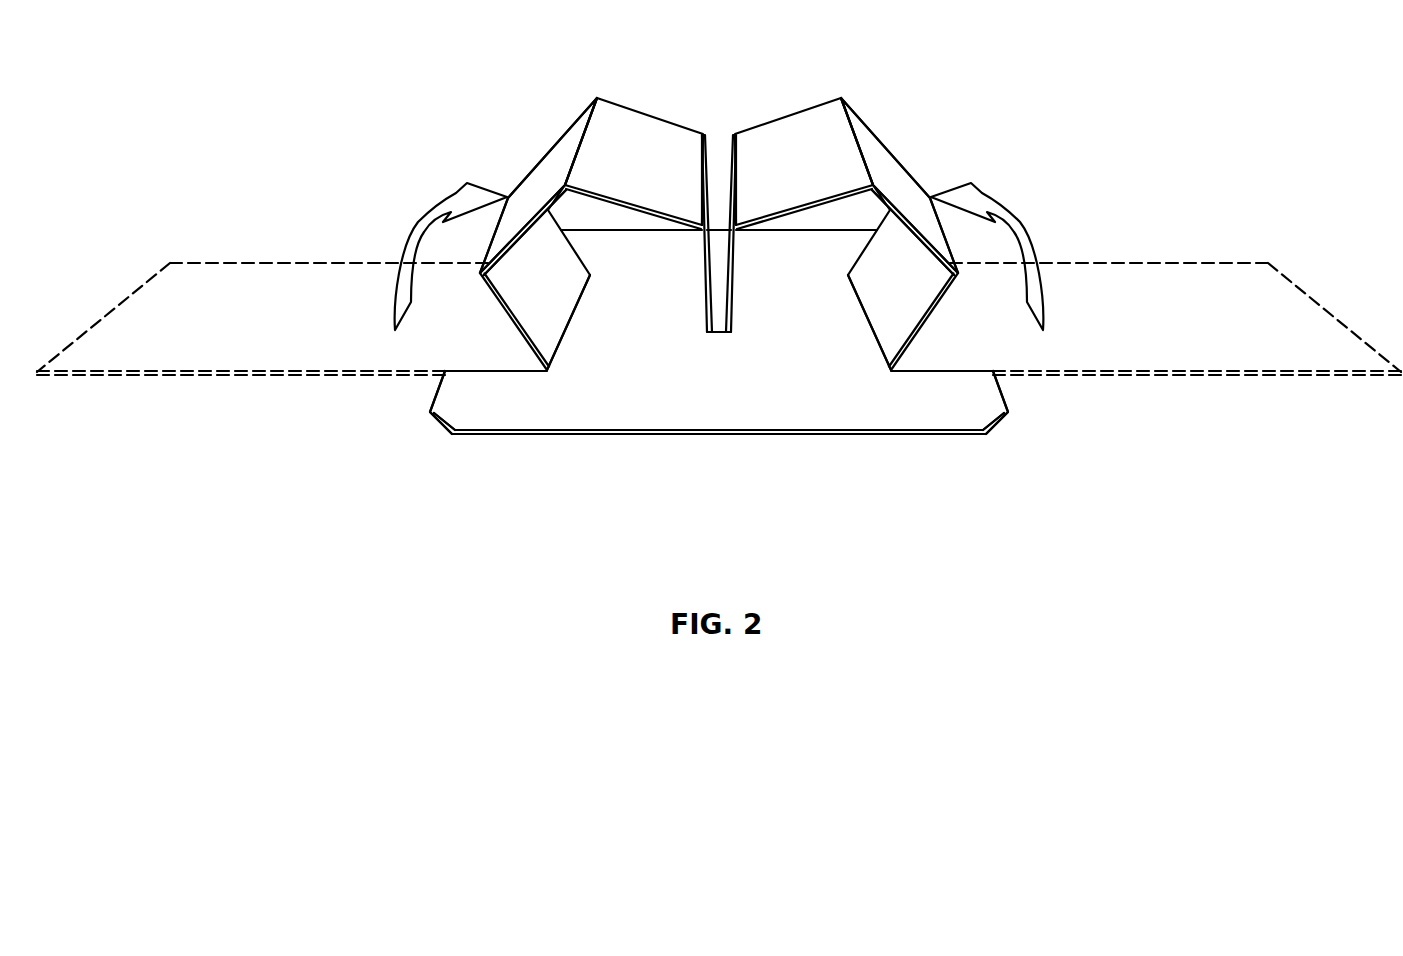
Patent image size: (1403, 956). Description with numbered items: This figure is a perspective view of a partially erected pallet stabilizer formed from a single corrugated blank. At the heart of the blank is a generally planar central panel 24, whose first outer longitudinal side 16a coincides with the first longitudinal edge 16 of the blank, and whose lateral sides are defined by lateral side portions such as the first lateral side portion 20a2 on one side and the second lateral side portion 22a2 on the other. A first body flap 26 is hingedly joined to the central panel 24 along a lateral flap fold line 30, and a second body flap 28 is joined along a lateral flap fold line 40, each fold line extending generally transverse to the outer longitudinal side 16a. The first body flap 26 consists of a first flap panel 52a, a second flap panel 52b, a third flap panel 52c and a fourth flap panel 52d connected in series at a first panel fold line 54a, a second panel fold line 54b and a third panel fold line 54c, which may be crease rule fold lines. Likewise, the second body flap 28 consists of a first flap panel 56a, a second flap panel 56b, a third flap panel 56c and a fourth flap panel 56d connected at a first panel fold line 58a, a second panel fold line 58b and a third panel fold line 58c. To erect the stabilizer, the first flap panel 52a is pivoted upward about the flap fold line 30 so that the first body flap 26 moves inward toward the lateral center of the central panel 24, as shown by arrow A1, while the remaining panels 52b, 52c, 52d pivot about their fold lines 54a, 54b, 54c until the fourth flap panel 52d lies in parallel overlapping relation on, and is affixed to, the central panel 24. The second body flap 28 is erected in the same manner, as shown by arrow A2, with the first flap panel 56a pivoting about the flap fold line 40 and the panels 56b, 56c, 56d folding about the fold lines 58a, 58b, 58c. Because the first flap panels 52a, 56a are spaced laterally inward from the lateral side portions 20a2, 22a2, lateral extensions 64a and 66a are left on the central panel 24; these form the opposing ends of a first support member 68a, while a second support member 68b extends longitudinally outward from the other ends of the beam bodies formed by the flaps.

The first longitudinal edge 16 is at (558, 436).
The first outer longitudinal side 16a is at (880, 436).
The first lateral side portion 20a2 is at (433, 393).
The second lateral side portion 22a2 is at (1003, 393).
The central panel 24 is at (733, 374).
The first body flap 26 is at (240, 381).
The second body flap 28 is at (1154, 381).
The lateral flap fold line 30 is at (562, 338).
The lateral flap fold line 40 is at (876, 338).
The first flap panel 52a is at (562, 289).
The second flap panel 52b is at (542, 173).
The third flap panel 52c is at (666, 175).
The fourth flap panel 52d is at (707, 242).
The first panel fold line 54a is at (507, 196).
The second panel fold line 54b is at (580, 139).
The third panel fold line 54c is at (700, 165).
The first flap panel 56a is at (925, 289).
The second flap panel 56b is at (896, 173).
The third flap panel 56c is at (826, 175).
The fourth flap panel 56d is at (728, 226).
The first panel fold line 58a is at (931, 196).
The second panel fold line 58b is at (858, 139).
The third panel fold line 58c is at (737, 165).
The lateral extension 64a is at (477, 417).
The lateral extension 66a is at (962, 417).
The first support member 68a is at (742, 417).
The second support member 68b is at (648, 246).
The arrow A1 is at (395, 256).
The arrow A2 is at (1043, 254).